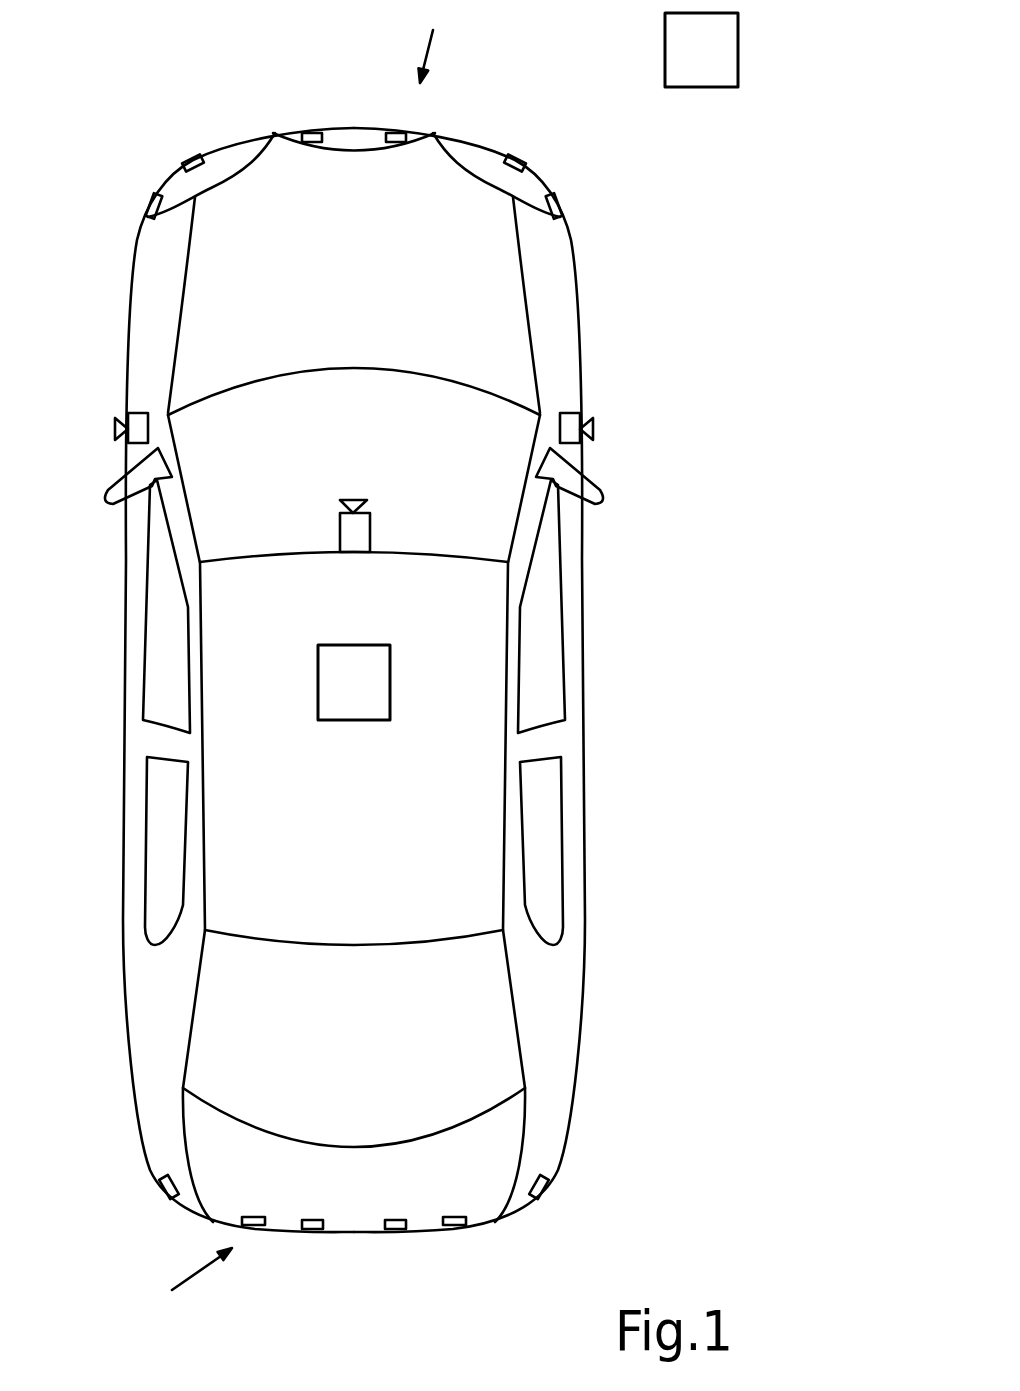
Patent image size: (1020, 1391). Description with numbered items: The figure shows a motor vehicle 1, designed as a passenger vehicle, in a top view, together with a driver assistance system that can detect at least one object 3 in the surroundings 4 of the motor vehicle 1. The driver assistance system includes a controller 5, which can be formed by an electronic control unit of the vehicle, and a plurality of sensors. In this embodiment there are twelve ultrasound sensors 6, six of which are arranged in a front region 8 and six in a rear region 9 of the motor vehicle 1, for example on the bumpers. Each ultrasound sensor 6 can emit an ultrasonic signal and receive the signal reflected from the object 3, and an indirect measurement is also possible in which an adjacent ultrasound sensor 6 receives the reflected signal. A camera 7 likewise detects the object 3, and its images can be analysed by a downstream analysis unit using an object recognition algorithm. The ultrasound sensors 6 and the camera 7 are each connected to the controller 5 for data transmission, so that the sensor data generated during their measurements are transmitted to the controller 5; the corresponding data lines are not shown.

The motor vehicle 1 is at (357, 129).
The object 3 is at (738, 50).
The surroundings 4 is at (349, 70).
The controller 5 is at (390, 687).
The ultrasound sensors 6 is at (187, 158).
The camera 7 is at (358, 532).
The front region 8 is at (433, 41).
The rear region 9 is at (192, 1285).